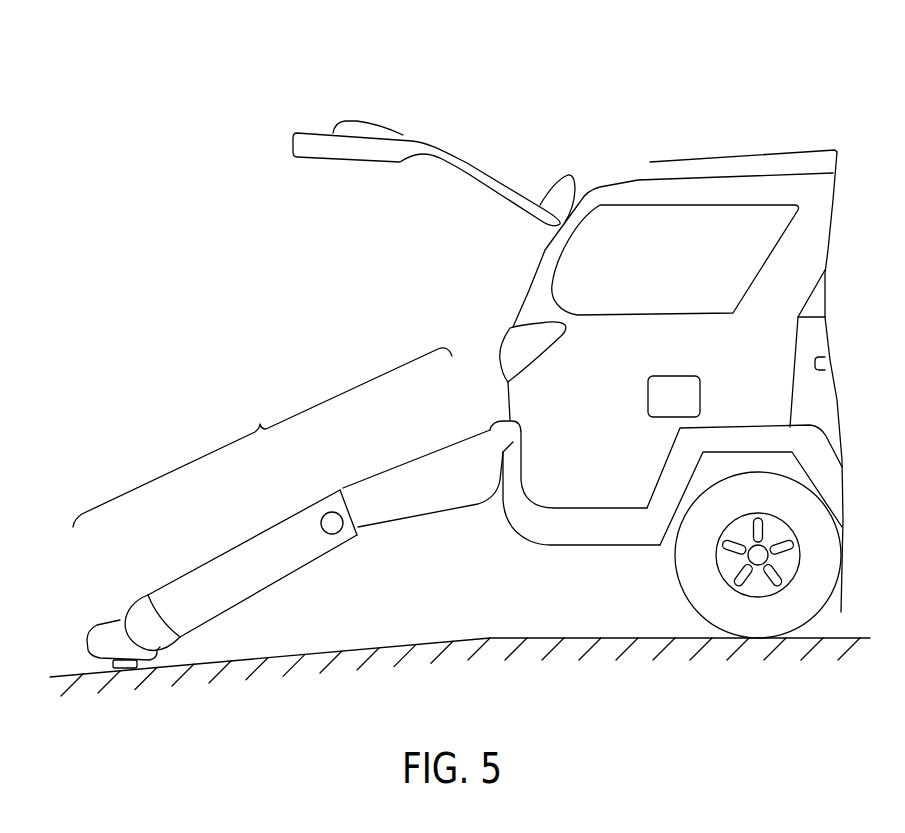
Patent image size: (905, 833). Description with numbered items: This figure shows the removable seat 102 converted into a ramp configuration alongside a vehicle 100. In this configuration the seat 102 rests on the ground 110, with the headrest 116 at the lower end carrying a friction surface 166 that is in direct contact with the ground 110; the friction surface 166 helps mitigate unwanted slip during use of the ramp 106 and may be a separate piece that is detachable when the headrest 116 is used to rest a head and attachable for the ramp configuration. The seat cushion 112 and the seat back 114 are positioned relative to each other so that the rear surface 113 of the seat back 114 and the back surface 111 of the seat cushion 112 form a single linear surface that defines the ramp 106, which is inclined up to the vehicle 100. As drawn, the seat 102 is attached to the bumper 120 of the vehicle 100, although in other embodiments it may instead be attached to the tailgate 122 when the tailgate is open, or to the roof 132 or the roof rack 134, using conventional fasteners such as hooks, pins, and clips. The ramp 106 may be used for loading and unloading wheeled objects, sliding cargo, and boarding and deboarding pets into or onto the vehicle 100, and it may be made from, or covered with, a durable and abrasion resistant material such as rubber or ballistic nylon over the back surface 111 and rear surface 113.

The vehicle 100 is at (738, 86).
The seat 102 is at (197, 428).
The ramp 106 is at (262, 437).
The ground 110 is at (540, 638).
The back surface 111 is at (387, 469).
The seat cushion 112 is at (433, 497).
The rear surface 113 is at (205, 563).
The seat back 114 is at (256, 584).
The headrest 116 is at (97, 627).
The bumper 120 is at (510, 515).
The tailgate 122 is at (417, 142).
The roof 132 is at (607, 182).
The roof rack 134 is at (650, 160).
The friction surface 166 is at (112, 663).